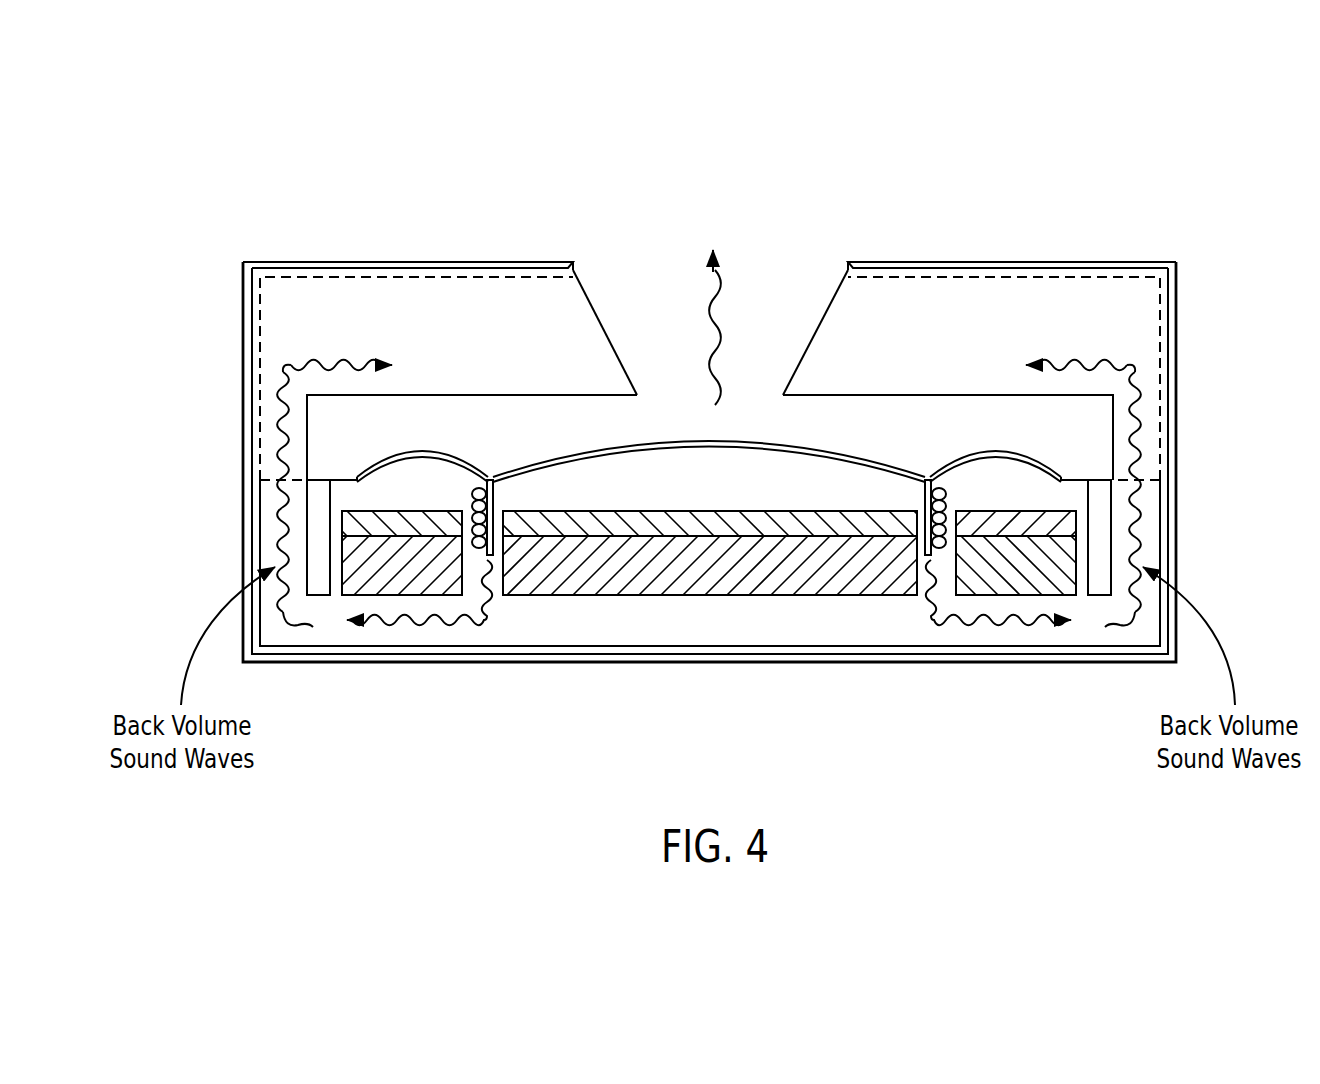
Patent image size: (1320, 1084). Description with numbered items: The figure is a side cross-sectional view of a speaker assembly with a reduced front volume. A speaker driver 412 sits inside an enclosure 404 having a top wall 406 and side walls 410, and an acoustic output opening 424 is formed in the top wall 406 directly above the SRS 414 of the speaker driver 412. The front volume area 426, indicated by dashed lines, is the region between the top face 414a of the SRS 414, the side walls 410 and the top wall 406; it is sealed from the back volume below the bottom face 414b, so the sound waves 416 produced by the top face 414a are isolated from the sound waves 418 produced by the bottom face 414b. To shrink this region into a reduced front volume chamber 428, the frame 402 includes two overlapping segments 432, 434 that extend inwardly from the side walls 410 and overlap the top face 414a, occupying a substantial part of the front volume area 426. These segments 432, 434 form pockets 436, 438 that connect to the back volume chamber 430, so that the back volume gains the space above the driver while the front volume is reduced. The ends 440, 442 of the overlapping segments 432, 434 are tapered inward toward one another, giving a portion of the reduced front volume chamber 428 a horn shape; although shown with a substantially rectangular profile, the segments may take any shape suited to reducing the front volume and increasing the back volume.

The frame 402 is at (1145, 368).
The enclosure 404 is at (707, 479).
The top wall 406 is at (957, 262).
The side walls 410 is at (243, 500).
The speaker driver 412 is at (265, 545).
The SRS 414 is at (709, 499).
The top face 414a is at (808, 441).
The bottom face 414b is at (845, 455).
The sound waves 416 is at (732, 272).
The sound waves 418 is at (495, 621).
The acoustic output opening 424 is at (787, 278).
The front volume area 426 is at (272, 440).
The reduced front volume chamber 428 is at (667, 378).
The back volume chamber 430 is at (707, 620).
The overlapping segment 432 is at (303, 325).
The overlapping segment 434 is at (1112, 327).
The pocket 436 is at (472, 375).
The pocket 438 is at (948, 375).
The end 440 is at (601, 327).
The end 442 is at (820, 322).